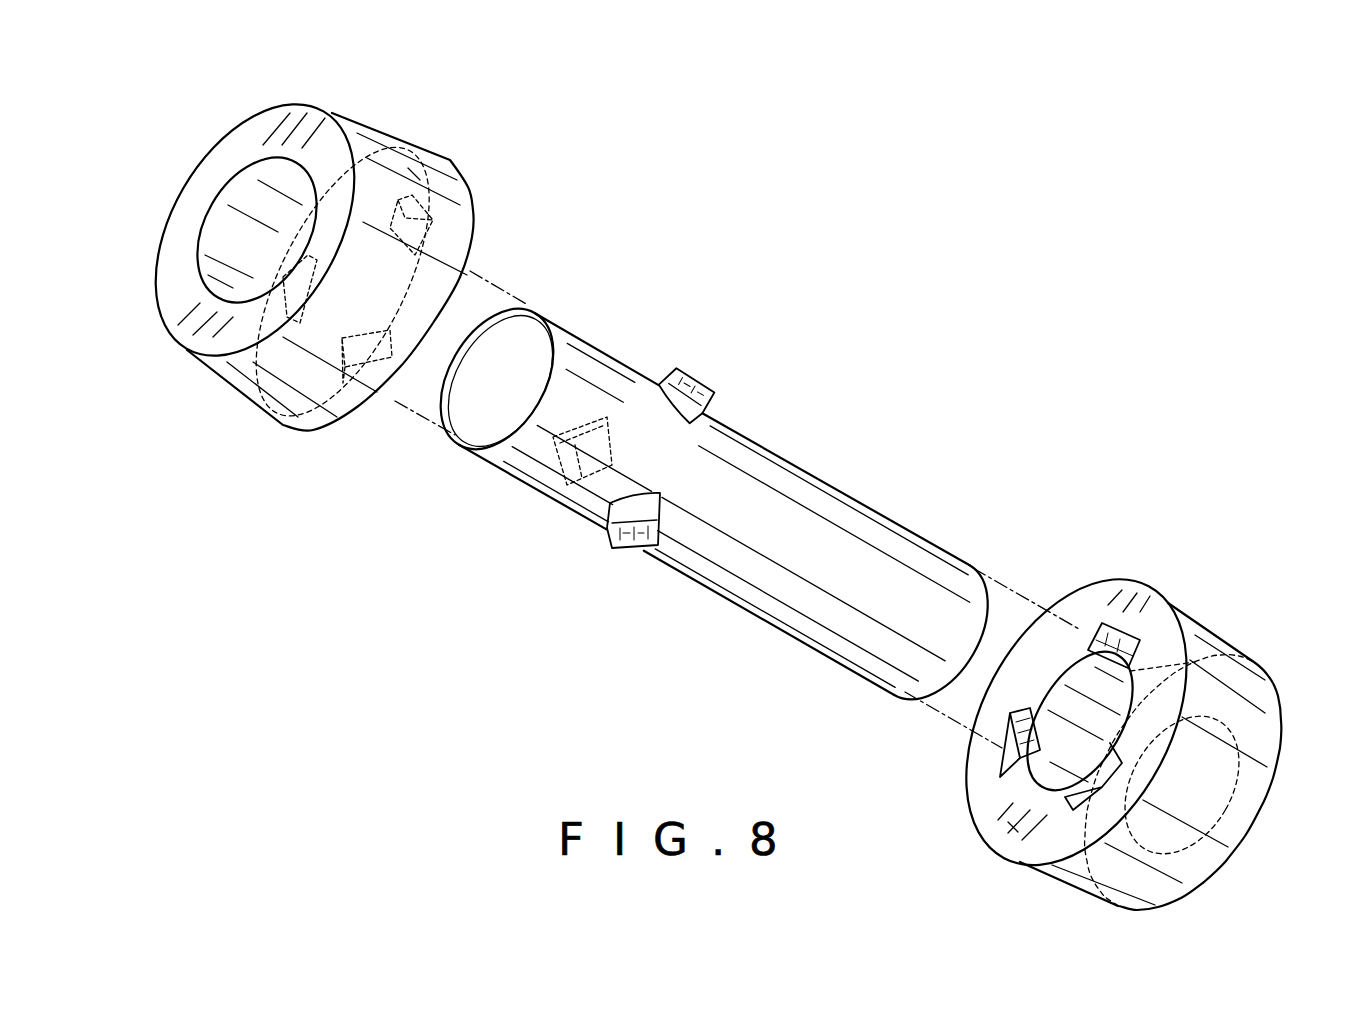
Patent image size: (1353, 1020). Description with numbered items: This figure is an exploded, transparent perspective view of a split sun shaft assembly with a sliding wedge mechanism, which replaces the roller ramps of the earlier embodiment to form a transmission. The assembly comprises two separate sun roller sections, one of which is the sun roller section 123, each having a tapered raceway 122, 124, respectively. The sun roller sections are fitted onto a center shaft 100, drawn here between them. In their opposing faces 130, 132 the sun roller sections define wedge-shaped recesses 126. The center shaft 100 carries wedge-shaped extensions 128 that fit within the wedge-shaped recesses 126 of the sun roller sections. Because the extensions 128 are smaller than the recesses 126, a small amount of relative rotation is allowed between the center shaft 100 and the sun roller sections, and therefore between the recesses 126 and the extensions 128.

The center shaft 100 is at (600, 347).
The tapered raceway 122 is at (363, 123).
The sun roller section 123 is at (1117, 582).
The tapered raceway 124 is at (1232, 645).
The wedge-shaped recess 126 is at (423, 223).
The wedge-shaped extension 128 is at (710, 383).
The opposing face 130 is at (415, 175).
The opposing face 132 is at (1003, 823).